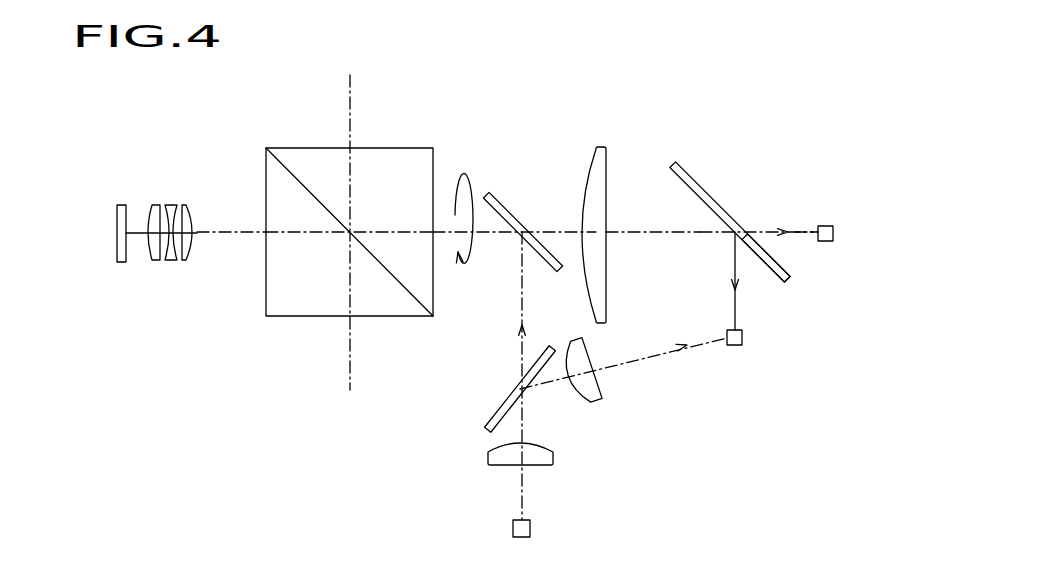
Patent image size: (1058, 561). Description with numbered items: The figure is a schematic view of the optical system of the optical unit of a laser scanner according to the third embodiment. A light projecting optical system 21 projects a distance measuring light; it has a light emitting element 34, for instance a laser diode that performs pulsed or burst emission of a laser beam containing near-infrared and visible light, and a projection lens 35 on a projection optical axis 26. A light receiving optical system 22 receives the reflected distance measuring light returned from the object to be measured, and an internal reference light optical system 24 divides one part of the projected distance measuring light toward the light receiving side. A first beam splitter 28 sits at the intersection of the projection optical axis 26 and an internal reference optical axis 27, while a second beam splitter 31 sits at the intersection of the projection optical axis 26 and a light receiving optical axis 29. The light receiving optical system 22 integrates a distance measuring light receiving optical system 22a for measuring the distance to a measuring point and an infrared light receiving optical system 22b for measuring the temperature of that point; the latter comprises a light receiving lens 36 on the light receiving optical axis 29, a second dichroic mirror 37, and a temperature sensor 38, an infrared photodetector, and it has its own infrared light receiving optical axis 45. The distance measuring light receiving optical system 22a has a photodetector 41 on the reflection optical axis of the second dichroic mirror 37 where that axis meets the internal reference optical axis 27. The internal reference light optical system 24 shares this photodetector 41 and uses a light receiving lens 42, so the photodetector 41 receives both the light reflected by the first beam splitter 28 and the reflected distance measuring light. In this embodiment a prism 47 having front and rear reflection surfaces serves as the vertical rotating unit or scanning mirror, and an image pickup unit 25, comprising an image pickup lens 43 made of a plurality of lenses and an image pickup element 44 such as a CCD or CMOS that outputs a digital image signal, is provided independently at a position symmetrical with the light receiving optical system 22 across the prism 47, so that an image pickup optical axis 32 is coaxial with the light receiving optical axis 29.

The light projecting optical system 21 is at (527, 389).
The light receiving optical system 22 is at (731, 206).
The distance measuring light receiving optical system 22a is at (790, 300).
The infrared light receiving optical system 22b is at (783, 218).
The internal reference light optical system 24 is at (682, 338).
The image pickup unit 25 is at (161, 245).
The projection optical axis 26 is at (523, 490).
The internal reference optical axis 27 is at (653, 355).
The first beam splitter 28 is at (500, 400).
The light receiving optical axis 29 is at (653, 237).
The second beam splitter 31 is at (510, 200).
The image pickup optical axis 32 is at (223, 232).
The light emitting element 34 is at (532, 530).
The projection lens 35 is at (555, 453).
The light receiving lens 36 is at (583, 180).
The second dichroic mirror 37 is at (721, 200).
The temperature sensor 38 is at (825, 226).
The photodetector 41 is at (743, 337).
The light receiving lens 42 is at (598, 403).
The image pickup lens 43 is at (173, 202).
The image pickup element 44 is at (117, 221).
The infrared light receiving optical axis 45 is at (735, 310).
The prism 47 is at (383, 148).